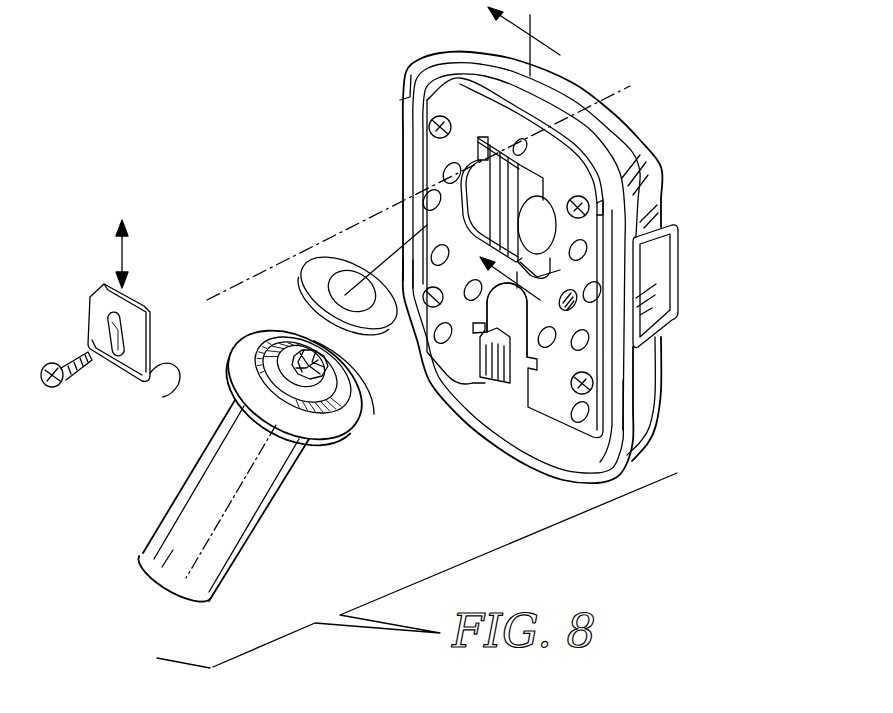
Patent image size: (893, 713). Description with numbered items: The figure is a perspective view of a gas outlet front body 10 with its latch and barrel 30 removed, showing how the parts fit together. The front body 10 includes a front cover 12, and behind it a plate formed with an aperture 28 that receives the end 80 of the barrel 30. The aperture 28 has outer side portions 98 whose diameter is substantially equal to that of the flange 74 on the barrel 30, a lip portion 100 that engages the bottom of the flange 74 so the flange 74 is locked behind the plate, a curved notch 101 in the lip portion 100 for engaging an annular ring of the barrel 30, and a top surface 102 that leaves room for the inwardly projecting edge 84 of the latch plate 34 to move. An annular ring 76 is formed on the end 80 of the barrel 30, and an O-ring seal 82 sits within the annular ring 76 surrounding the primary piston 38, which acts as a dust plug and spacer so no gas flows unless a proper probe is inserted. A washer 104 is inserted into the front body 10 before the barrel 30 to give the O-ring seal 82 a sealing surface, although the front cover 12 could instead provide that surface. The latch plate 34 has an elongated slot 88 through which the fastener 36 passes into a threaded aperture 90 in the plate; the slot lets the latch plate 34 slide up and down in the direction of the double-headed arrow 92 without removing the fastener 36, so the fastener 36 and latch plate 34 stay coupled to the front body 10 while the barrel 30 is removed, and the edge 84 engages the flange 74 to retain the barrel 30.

The front body 10 is at (699, 144).
The front cover 12 is at (650, 387).
The aperture 28 is at (455, 210).
The barrel 30 is at (168, 522).
The latch plate 34 is at (100, 300).
The fastener 36 is at (72, 357).
The primary piston 38 is at (328, 325).
The flange 74 is at (342, 430).
The annular ring 76 is at (330, 423).
The end 80 is at (286, 334).
The O-ring seal 82 is at (290, 372).
The inwardly projecting edge 84 is at (174, 388).
The elongated slot 88 is at (123, 323).
The threaded aperture 90 is at (527, 180).
The double-headed arrow 92 is at (127, 258).
The outer side portions 98 is at (540, 250).
The lip portion 100 is at (465, 228).
The curved notch 101 is at (598, 267).
The top surface 102 is at (490, 150).
The washer 104 is at (318, 273).